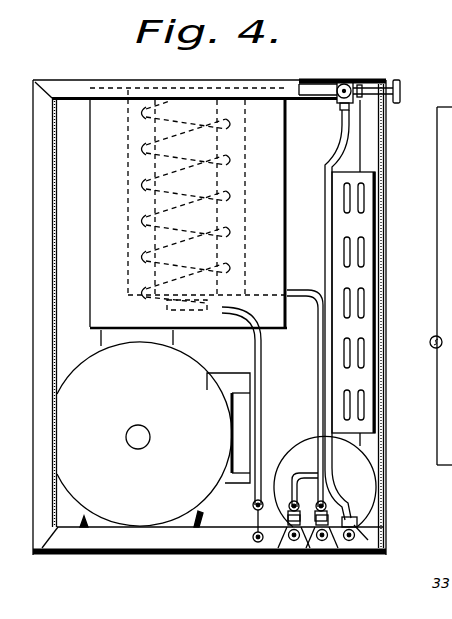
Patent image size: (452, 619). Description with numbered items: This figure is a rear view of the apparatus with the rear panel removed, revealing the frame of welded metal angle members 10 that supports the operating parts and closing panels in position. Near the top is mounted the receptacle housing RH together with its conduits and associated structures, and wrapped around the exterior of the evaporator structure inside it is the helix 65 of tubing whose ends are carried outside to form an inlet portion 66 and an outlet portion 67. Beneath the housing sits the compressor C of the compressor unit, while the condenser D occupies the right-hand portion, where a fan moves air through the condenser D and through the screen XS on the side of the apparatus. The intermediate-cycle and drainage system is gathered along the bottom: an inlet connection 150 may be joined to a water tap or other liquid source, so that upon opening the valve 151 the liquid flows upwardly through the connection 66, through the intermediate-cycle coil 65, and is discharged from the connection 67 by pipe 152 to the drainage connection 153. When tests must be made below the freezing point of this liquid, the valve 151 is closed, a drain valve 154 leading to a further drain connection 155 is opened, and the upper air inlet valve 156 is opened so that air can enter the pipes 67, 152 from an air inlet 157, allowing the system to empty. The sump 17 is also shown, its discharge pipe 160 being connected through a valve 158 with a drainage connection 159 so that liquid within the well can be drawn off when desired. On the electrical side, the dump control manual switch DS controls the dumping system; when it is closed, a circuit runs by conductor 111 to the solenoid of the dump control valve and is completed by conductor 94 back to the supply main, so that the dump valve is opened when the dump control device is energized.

The welded metal angle members 10 is at (53, 70).
The receptacle housing RH is at (113, 113).
The helix of tubing 65 is at (260, 165).
The inlet portion 66 is at (318, 390).
The outlet portion 67 is at (309, 83).
The conductor 94 is at (440, 134).
The conductor 111 is at (436, 192).
The condenser D is at (363, 222).
The screen XS is at (385, 285).
The dump control manual switch DS is at (430, 340).
The pipe 152 is at (339, 129).
The upper air inlet valve 156 is at (399, 82).
The air inlet 157 is at (347, 82).
The discharge pipe 160 is at (259, 355).
The compressor C is at (153, 434).
The sump 17 is at (357, 483).
The valve 158 is at (253, 505).
The drainage connection 159 is at (255, 541).
The inlet connection 150 is at (294, 546).
The valve 151 is at (286, 527).
The drainage connection 153 is at (362, 541).
The drain valve 154 is at (331, 545).
The drain connection 155 is at (332, 547).